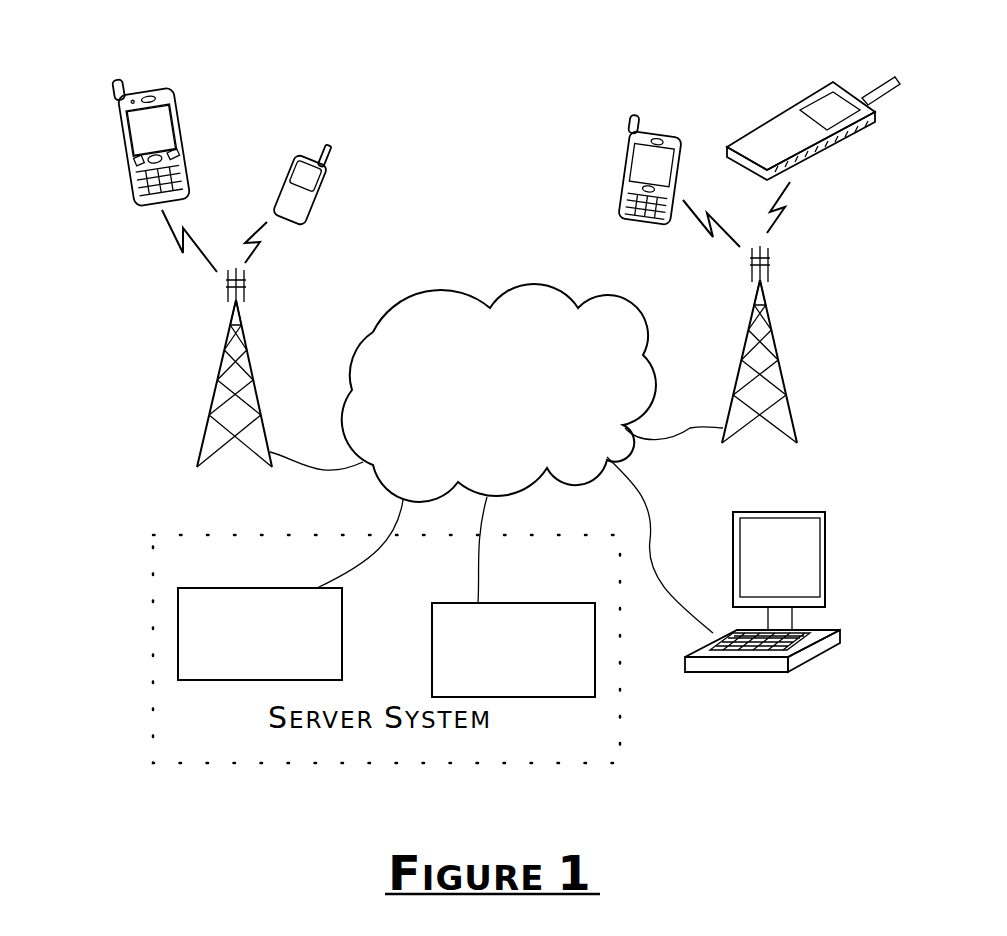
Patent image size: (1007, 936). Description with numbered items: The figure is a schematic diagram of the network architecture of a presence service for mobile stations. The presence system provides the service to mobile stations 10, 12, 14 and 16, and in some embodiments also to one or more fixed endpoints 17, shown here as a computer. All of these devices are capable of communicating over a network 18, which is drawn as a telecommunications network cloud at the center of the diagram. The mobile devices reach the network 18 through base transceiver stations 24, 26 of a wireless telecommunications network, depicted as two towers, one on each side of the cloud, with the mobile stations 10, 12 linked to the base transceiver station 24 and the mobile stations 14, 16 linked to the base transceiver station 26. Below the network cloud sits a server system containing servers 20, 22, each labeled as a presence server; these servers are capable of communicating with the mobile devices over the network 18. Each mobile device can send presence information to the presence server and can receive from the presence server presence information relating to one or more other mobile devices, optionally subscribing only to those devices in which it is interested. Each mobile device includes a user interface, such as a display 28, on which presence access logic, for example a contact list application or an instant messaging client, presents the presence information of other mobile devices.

The mobile station 10 is at (155, 88).
The mobile station 12 is at (286, 148).
The mobile station 14 is at (628, 153).
The mobile station 16 is at (775, 118).
The fixed endpoint 17 is at (743, 672).
The network 18 is at (507, 287).
The server 20 is at (178, 637).
The server 22 is at (552, 697).
The base transceiver station 24 is at (210, 405).
The base transceiver station 26 is at (783, 382).
The display 28 is at (128, 137).